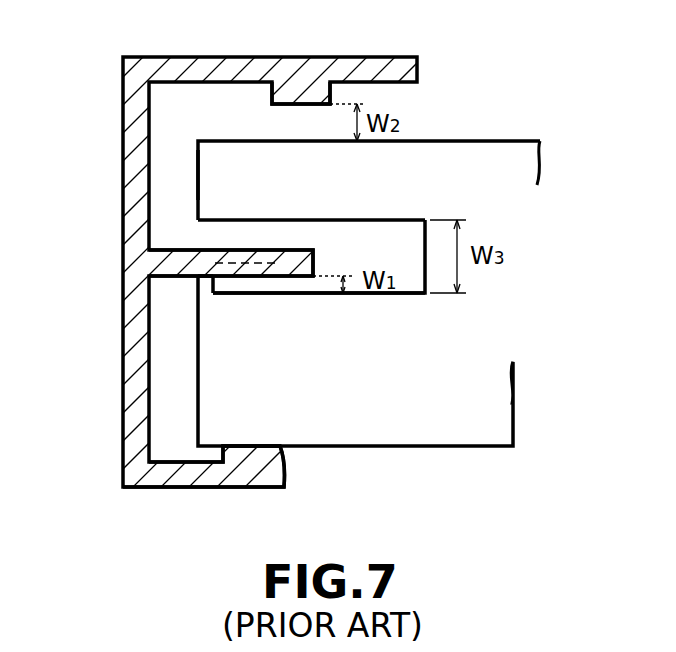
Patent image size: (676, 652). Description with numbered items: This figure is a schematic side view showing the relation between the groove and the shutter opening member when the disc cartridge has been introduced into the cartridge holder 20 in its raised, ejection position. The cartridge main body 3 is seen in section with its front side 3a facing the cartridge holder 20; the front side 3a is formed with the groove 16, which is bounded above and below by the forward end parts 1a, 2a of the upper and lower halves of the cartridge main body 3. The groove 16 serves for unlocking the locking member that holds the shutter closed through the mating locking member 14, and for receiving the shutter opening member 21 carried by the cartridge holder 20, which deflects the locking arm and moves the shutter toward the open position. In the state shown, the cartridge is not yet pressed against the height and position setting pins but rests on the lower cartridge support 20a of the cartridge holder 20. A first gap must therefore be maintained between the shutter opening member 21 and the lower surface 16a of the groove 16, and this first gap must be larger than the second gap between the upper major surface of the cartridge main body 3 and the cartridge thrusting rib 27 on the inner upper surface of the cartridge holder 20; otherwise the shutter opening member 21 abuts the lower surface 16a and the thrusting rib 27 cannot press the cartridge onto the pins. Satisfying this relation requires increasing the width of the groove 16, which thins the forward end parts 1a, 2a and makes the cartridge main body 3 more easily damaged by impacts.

The cartridge holder 20 is at (123, 70).
The cartridge thrusting rib 27 is at (352, 85).
The mating locking member 14 is at (203, 252).
The lower cartridge support 20a is at (277, 452).
The cartridge main body 3 is at (510, 148).
The front side 3a is at (438, 141).
The forward end part of upper half 1a is at (212, 163).
The groove 16 is at (369, 220).
The lower surface of the groove 16a is at (284, 296).
The forward end part of lower half 2a is at (197, 403).
The shutter opening member 21 is at (200, 277).